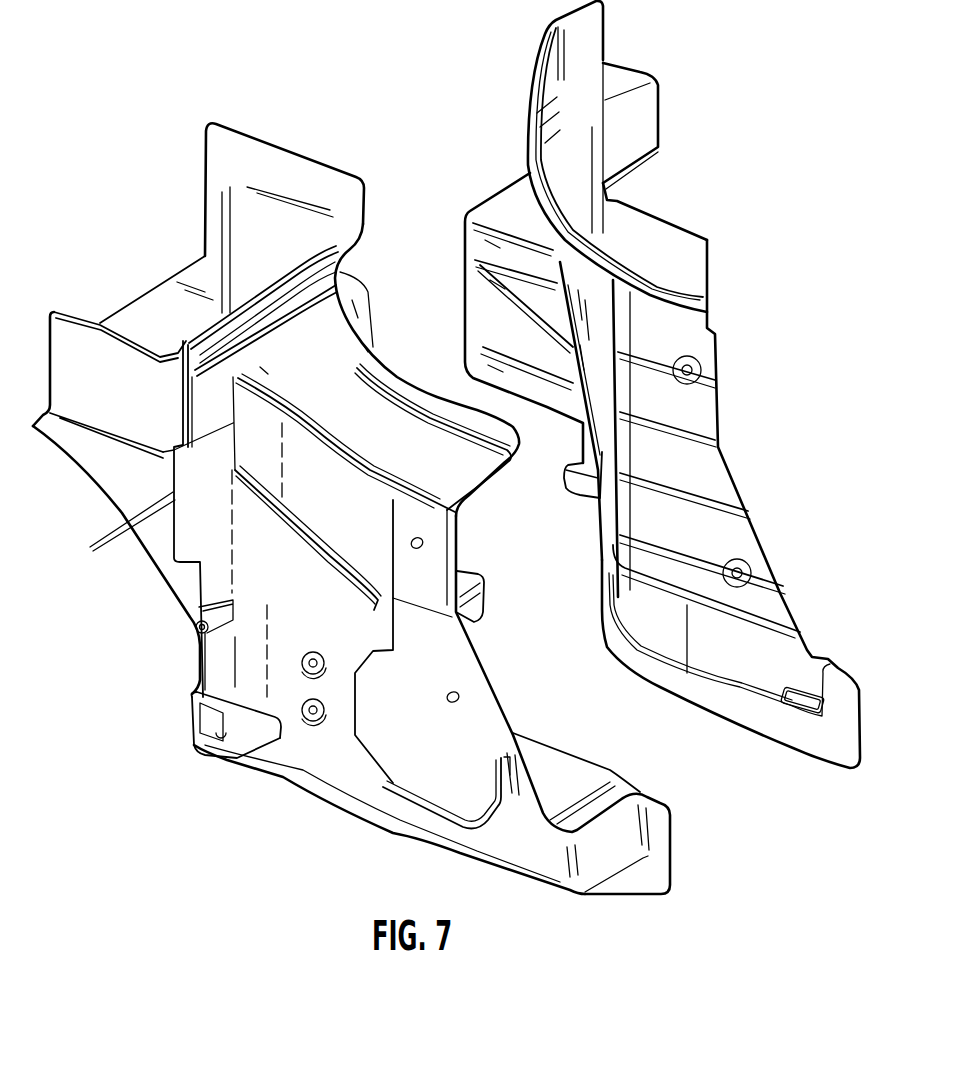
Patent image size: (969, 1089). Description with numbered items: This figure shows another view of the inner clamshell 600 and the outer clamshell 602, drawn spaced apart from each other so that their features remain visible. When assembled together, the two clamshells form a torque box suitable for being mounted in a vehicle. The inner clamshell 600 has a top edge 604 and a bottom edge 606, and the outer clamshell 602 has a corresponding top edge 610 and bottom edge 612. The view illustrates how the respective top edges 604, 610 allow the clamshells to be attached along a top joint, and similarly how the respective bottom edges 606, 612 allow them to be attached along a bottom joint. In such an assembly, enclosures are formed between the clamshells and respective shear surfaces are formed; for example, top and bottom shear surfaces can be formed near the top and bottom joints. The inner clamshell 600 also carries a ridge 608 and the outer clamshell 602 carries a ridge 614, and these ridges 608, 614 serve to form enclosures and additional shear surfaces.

The inner clamshell 600 is at (342, 539).
The outer clamshell 602 is at (661, 413).
The top edge 604 is at (426, 386).
The bottom edge 606 is at (633, 887).
The ridge 608 is at (474, 568).
The top edge 610 is at (527, 118).
The bottom edge 612 is at (797, 750).
The ridge 614 is at (588, 480).